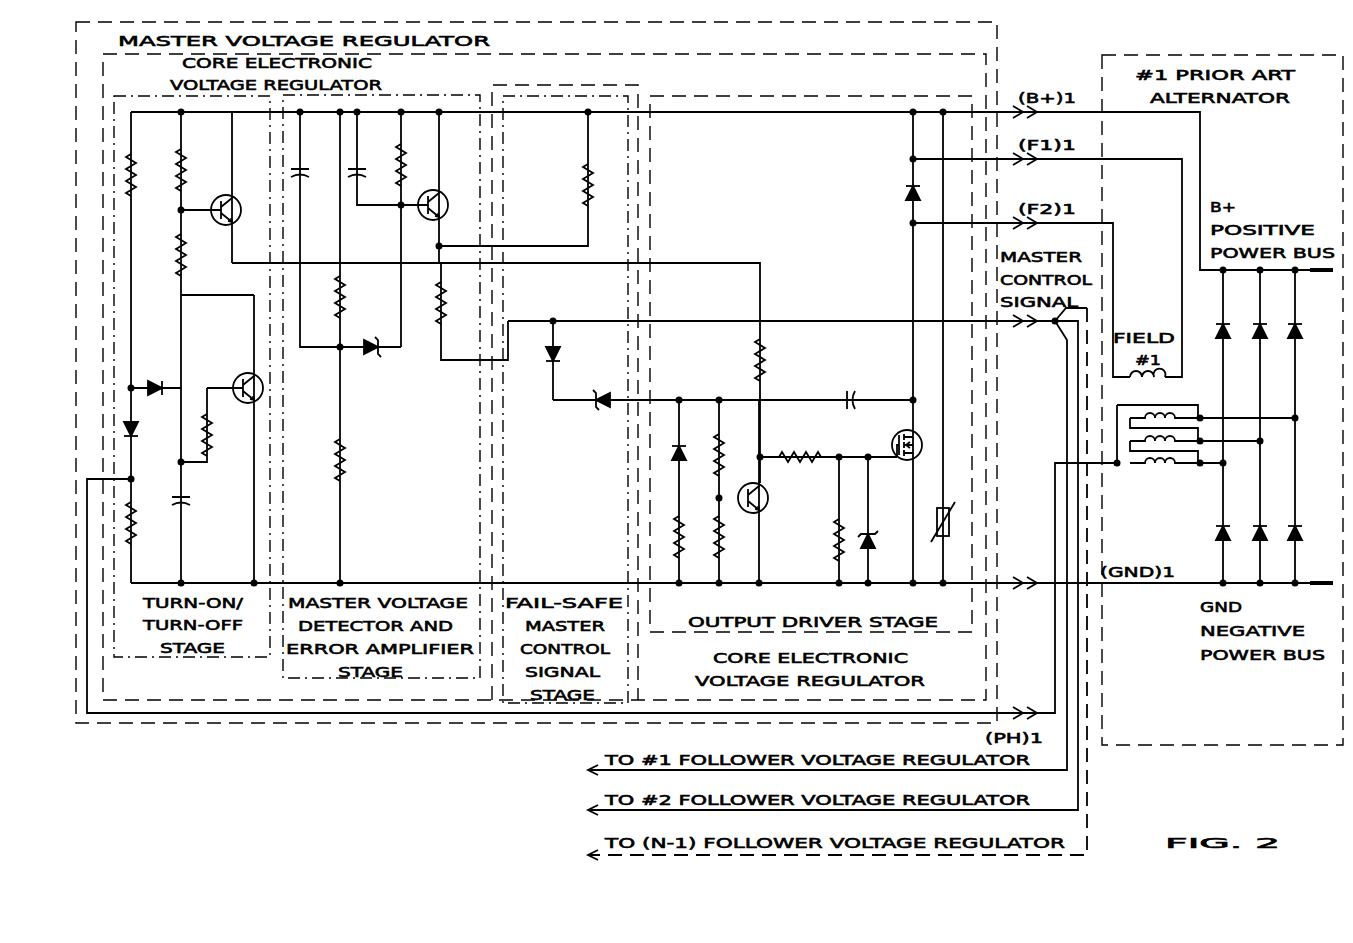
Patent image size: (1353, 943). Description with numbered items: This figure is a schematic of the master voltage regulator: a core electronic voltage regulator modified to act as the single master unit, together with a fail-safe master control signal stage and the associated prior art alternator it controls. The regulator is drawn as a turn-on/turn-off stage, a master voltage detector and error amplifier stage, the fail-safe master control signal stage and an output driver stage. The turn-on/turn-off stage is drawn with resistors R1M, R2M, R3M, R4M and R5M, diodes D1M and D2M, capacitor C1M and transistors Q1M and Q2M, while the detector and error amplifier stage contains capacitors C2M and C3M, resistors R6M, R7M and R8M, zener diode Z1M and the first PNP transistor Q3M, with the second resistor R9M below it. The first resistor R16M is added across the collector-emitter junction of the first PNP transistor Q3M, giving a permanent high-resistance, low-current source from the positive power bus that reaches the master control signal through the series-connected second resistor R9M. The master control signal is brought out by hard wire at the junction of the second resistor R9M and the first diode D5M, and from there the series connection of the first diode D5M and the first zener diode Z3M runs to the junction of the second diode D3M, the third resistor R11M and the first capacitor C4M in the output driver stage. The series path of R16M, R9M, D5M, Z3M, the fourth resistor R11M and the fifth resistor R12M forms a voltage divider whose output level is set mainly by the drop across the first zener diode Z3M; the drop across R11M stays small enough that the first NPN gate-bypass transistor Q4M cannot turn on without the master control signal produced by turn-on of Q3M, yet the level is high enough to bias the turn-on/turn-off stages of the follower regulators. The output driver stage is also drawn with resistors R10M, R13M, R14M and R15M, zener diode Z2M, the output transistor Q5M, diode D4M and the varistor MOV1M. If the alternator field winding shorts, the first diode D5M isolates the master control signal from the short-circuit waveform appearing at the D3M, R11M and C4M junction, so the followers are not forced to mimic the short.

The resistor R1M is at (142, 250).
The resistor R2M is at (142, 531).
The resistor R3M is at (191, 170).
The resistor R4M is at (191, 255).
The resistor R5M is at (217, 435).
The resistor R6M is at (351, 297).
The resistor R7M is at (351, 460).
The resistor R8M is at (412, 165).
The second resistor R9M is at (434, 303).
The resistor R10M is at (669, 537).
The third resistor R11M is at (709, 455).
The fifth resistor R12M is at (709, 537).
The resistor R13M is at (751, 361).
The resistor R14M is at (799, 449).
The resistor R15M is at (829, 542).
The first resistor R16M is at (599, 186).
The capacitor C1M is at (189, 500).
The capacitor C2M is at (309, 174).
The capacitor C3M is at (366, 174).
The first capacitor C4M is at (841, 390).
The diode D1M is at (141, 433).
The diode D2M is at (158, 377).
The second diode D3M is at (670, 454).
The diode D4M is at (904, 194).
The first diode D5M is at (563, 356).
The zener diode Z1M is at (371, 359).
The zener diode Z2M is at (876, 540).
The first zener diode Z3M is at (595, 411).
The transistor Q1M is at (235, 201).
The transistor Q2M is at (235, 381).
The first PNP transistor Q3M is at (442, 196).
The first NPN gate-bypass transistor Q4M is at (763, 499).
The MOSFET output transistor Q5M is at (897, 433).
The metal oxide varistor MOV1M is at (950, 504).